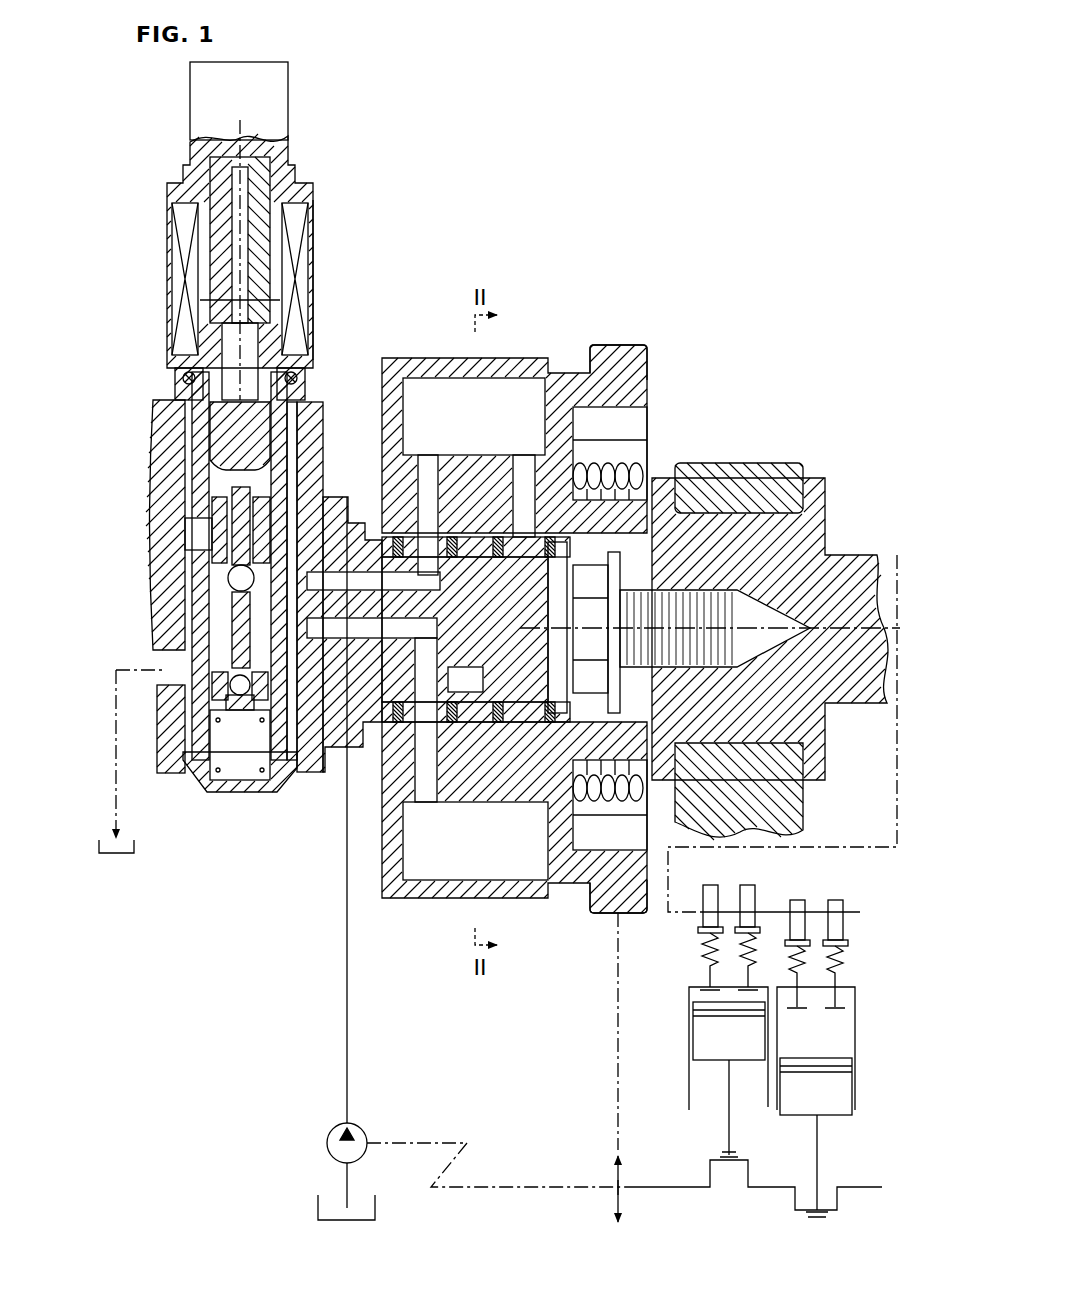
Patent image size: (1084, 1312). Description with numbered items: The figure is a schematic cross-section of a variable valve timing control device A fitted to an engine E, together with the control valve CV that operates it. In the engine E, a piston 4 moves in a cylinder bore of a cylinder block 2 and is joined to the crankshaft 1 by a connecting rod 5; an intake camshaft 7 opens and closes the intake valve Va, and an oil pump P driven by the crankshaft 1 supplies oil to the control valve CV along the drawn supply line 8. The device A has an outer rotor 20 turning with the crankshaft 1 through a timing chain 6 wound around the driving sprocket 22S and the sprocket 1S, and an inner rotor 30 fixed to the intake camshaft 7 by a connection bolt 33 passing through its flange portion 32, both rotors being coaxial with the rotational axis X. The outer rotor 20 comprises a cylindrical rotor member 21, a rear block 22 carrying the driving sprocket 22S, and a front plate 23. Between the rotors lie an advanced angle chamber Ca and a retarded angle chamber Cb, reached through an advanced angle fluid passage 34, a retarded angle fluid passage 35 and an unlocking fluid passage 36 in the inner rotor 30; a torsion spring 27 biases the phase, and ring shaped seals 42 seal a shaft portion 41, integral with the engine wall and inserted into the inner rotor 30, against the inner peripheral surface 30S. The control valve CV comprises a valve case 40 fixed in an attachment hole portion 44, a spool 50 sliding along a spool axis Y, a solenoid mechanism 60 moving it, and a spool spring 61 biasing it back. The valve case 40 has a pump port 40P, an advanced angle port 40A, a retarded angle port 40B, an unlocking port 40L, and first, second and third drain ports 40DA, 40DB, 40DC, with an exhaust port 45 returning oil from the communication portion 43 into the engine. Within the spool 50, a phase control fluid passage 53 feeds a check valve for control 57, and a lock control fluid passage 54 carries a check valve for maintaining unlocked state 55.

The control valve CV is at (156, 219).
The engine E is at (817, 257).
The solenoid mechanism 60 is at (314, 266).
The spool axis Y is at (210, 323).
The variable valve timing control device A is at (382, 357).
The outer rotor 20 is at (510, 630).
The rotor member 21 is at (505, 352).
The rear block 22 is at (649, 388).
The driving sprocket 22S is at (605, 915).
The front plate 23 is at (382, 855).
The valve case 40 is at (172, 415).
The spool 50 is at (305, 432).
The phase control fluid passage 53 is at (195, 470).
The pump port 40P is at (294, 499).
The advanced angle chamber Ca is at (480, 428).
The retarded angle chamber Cb is at (485, 856).
The advanced angle fluid passage 34 is at (527, 455).
The retarded angle fluid passage 35 is at (430, 645).
The unlocking fluid passage 36 is at (478, 679).
The ring shaped seals 42 is at (452, 538).
The torsion spring 27 is at (620, 478).
The inner peripheral surface 30S is at (650, 525).
The intake camshaft 7 is at (866, 555).
The check valve for control 57 is at (208, 583).
The communication portion 43 is at (190, 592).
The advanced angle port 40A is at (300, 575).
The retarded angle port 40B is at (290, 628).
The connection bolt 33 is at (745, 637).
The first drain port 40DA is at (193, 535).
The second drain port 40DB is at (192, 653).
The third drain port 40DC is at (193, 770).
The lock control fluid passage 54 is at (220, 683).
The exhaust port 45 is at (170, 683).
The check valve for maintaining unlocked state 55 is at (240, 745).
The shaft portion 41 is at (568, 700).
The rotational axis X is at (838, 640).
The flange portion 32 is at (649, 705).
The spool spring 61 is at (209, 792).
The attachment hole portion 44 is at (266, 790).
The unlocking port 40L is at (310, 762).
The inner rotor 30 is at (501, 634).
The supply passage 8 is at (348, 1025).
The timing chain 6 is at (617, 1035).
The intake valve Va is at (708, 988).
The piston 4 is at (700, 1032).
The cylinder block 2 is at (690, 1082).
The connecting rod 5 is at (729, 1137).
The crankshaft 1 is at (648, 1183).
The sprocket 1S is at (612, 1178).
The oil pump P is at (330, 1131).